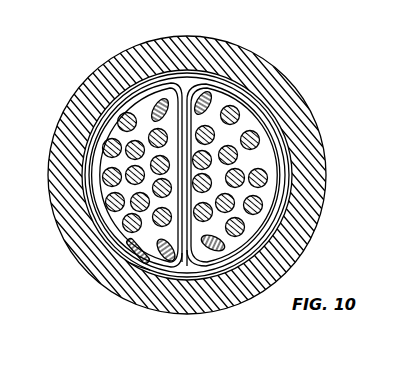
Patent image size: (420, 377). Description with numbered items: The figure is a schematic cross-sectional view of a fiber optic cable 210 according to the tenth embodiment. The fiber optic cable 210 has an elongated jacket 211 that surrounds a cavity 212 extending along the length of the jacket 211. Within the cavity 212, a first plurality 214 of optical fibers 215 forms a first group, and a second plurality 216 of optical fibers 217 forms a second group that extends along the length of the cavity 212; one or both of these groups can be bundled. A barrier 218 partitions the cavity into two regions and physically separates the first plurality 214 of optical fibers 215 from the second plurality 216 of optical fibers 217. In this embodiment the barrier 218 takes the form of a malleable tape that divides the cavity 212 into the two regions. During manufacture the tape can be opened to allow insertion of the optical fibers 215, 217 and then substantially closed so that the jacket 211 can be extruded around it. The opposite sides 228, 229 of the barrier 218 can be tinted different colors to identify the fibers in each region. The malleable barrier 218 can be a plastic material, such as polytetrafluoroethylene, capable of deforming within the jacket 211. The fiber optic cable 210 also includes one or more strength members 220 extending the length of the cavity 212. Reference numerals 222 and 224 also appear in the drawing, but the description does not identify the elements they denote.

The fiber optic cable 210 is at (324, 116).
The elongated jacket 211 is at (66, 222).
The cavity 212 is at (152, 262).
The first plurality of optical fibers 214 is at (253, 225).
The optical fibers 215 is at (268, 173).
The second plurality of optical fibers 216 is at (98, 79).
The optical fibers 217 is at (86, 141).
The barrier 218 is at (189, 267).
The strength members 220 is at (143, 109).
The lumen wall 222 is at (253, 160).
The filler member 224 is at (147, 247).
The side of the tape 228 is at (248, 82).
The side of the tape 229 is at (262, 98).